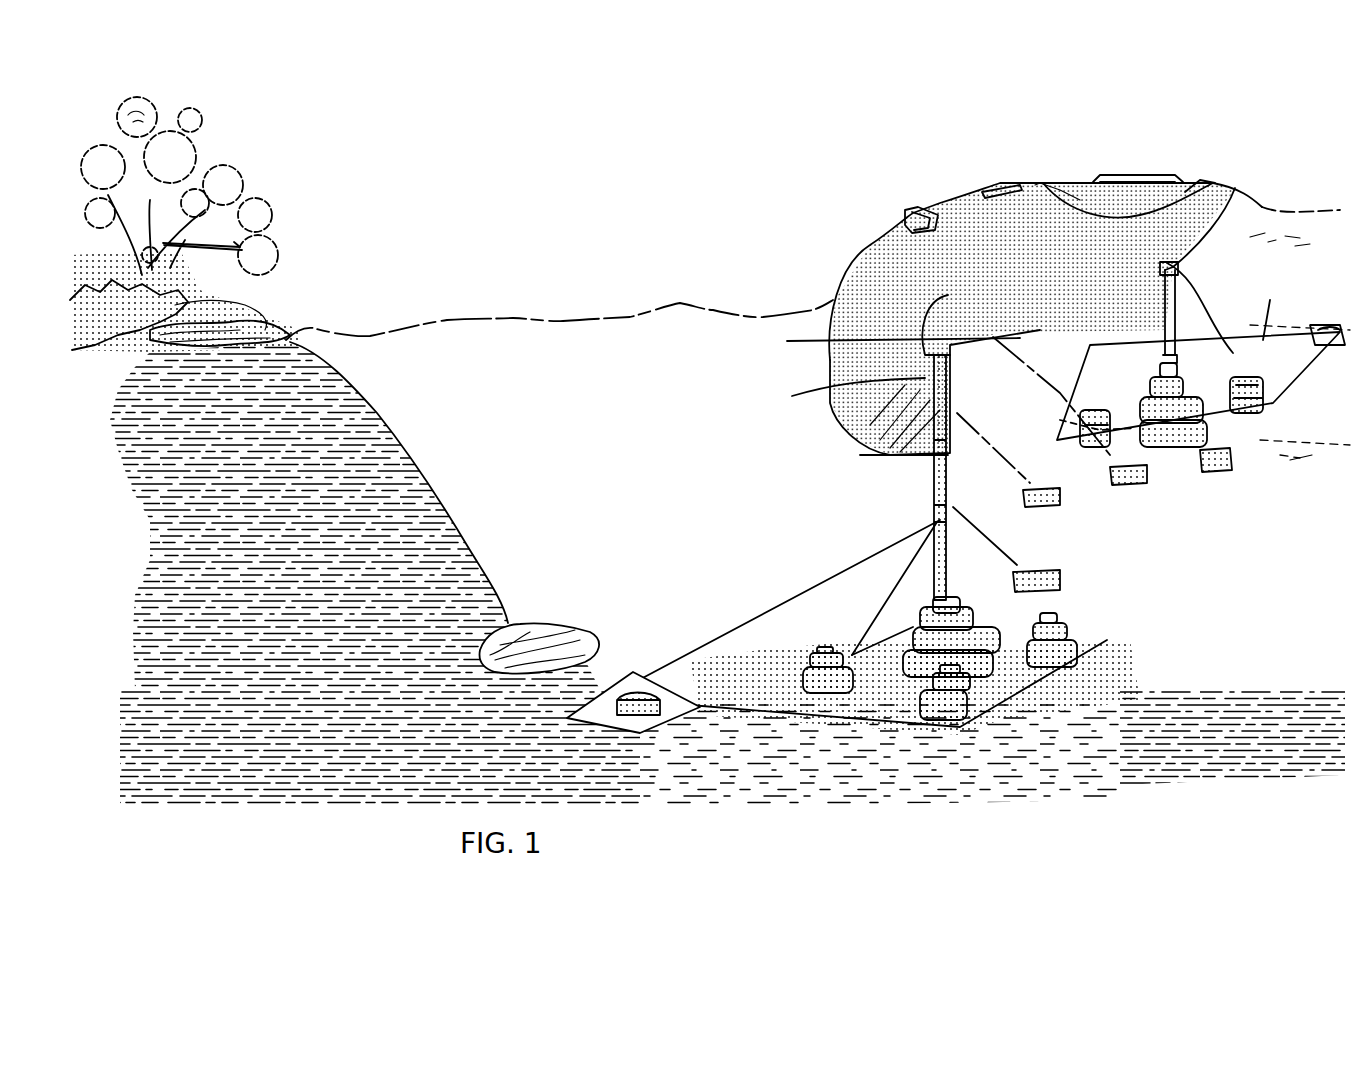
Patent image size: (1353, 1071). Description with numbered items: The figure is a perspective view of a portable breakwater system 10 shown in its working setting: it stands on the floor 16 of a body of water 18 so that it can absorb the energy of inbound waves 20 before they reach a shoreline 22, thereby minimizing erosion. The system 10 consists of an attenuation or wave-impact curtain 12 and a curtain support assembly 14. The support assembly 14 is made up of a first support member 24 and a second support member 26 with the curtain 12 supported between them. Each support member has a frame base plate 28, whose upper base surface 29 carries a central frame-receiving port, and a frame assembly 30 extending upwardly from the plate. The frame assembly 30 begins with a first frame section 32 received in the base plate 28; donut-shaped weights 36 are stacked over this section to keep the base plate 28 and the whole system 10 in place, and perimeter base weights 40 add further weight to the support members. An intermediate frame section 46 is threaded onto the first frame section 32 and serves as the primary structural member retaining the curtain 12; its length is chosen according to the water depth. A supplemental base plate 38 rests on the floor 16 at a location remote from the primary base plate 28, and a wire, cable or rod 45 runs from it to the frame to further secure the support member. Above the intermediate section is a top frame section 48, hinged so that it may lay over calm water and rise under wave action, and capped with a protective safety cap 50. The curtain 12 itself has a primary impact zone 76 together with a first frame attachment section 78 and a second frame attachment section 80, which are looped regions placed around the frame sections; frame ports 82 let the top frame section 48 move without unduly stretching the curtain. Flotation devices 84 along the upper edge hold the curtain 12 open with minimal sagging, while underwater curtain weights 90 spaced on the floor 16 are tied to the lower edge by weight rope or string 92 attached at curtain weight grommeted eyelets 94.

The portable breakwater system 10 is at (799, 166).
The wave-impact curtain 12 is at (1010, 319).
The curtain support assembly 14 is at (1202, 570).
The floor 16 is at (633, 661).
The body of water 18 is at (562, 433).
The inbound waves 20 is at (1258, 205).
The shoreline 22 is at (245, 342).
The first support member 24 is at (895, 480).
The second support member 26 is at (1200, 308).
The frame base plate 28 is at (797, 683).
The upper base surface 29 is at (900, 702).
The frame assembly 30 is at (1141, 338).
The first frame section 32 is at (1182, 362).
The weights 36 is at (1152, 378).
The supplemental base plate 38 is at (638, 690).
The perimeter base weights 40 is at (1262, 345).
The wire, cable or rod 45 is at (788, 608).
The intermediate frame section 46 is at (948, 478).
The top frame section 48 is at (1195, 195).
The protective safety cap 50 is at (1045, 186).
The primary impact zone 76 is at (872, 258).
The first frame attachment section 78 is at (795, 397).
The second frame attachment section 80 is at (1180, 268).
The frame ports 82 is at (790, 345).
The flotation devices 84 is at (907, 210).
The underwater curtain weights 90 is at (1055, 507).
The weight rope or string 92 is at (1047, 397).
The curtain weight grommeted eyelets 94 is at (860, 455).